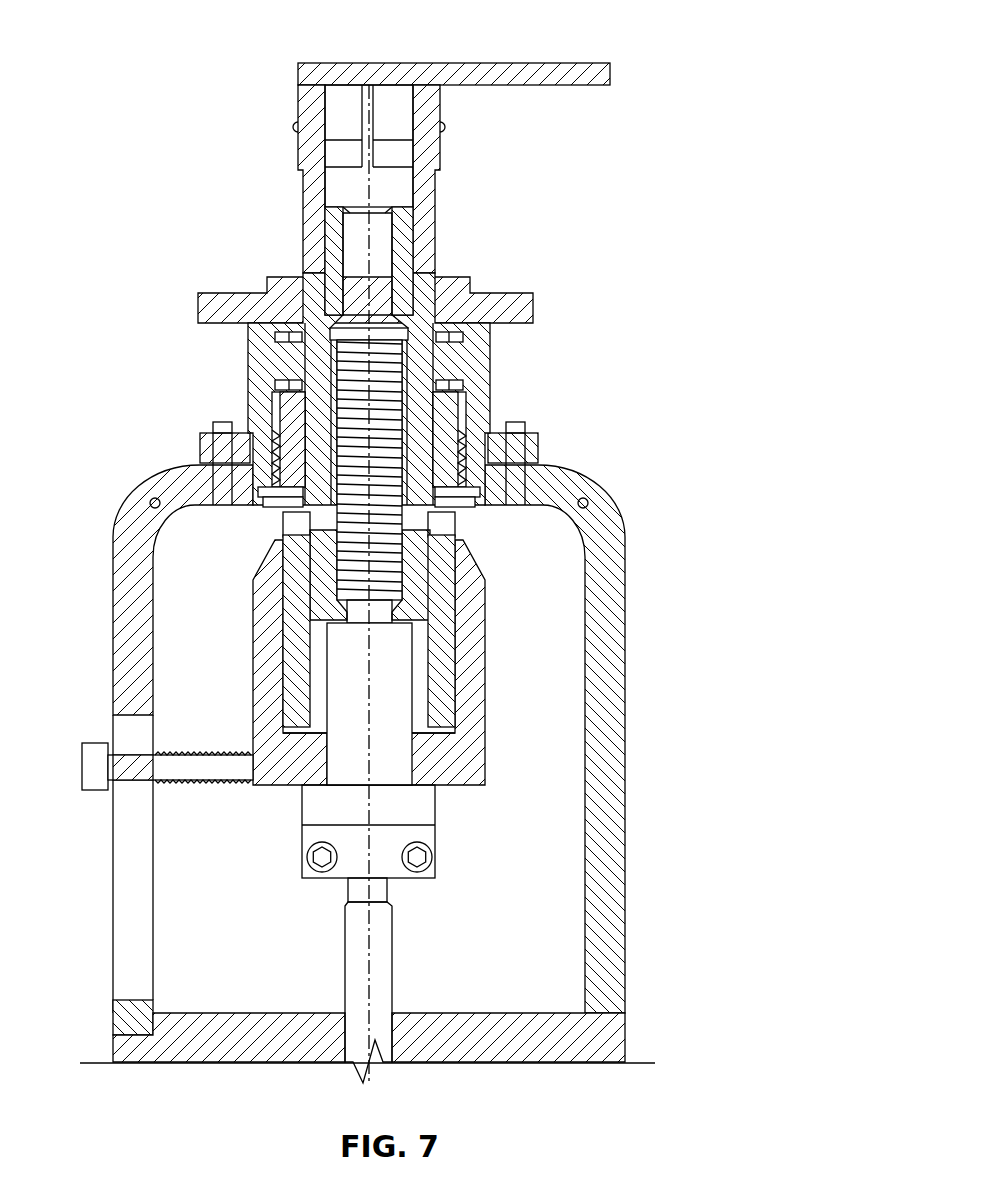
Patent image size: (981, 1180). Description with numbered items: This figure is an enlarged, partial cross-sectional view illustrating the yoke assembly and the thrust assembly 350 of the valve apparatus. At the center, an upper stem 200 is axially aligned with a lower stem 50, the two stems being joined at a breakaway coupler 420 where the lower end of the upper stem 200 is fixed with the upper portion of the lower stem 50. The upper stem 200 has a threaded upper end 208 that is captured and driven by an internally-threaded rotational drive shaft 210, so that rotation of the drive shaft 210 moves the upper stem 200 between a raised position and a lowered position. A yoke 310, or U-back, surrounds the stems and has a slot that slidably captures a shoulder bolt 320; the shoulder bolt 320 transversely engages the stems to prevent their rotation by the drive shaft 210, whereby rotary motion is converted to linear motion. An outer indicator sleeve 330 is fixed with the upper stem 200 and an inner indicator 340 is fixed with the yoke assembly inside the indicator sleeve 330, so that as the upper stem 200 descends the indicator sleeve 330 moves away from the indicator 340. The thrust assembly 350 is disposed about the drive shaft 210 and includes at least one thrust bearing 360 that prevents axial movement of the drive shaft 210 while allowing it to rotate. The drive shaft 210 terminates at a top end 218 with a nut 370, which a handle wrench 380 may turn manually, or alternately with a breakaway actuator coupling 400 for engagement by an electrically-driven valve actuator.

The lower stem 50 is at (395, 975).
The upper stem 200 is at (395, 765).
The threaded upper end 208 is at (400, 462).
The rotational drive shaft 210 is at (455, 368).
The top end 218 is at (355, 278).
The yoke 310 is at (612, 535).
The shoulder bolt 320 is at (213, 745).
The outer indicator sleeve 330 is at (487, 700).
The inner indicator 340 is at (443, 658).
The thrust assembly 350 is at (210, 302).
The thrust bearing 360 is at (283, 338).
The nut 370 is at (403, 240).
The handle wrench 380 is at (527, 63).
The breakaway actuator coupling 400 is at (440, 152).
The breakaway coupler 420 is at (438, 852).